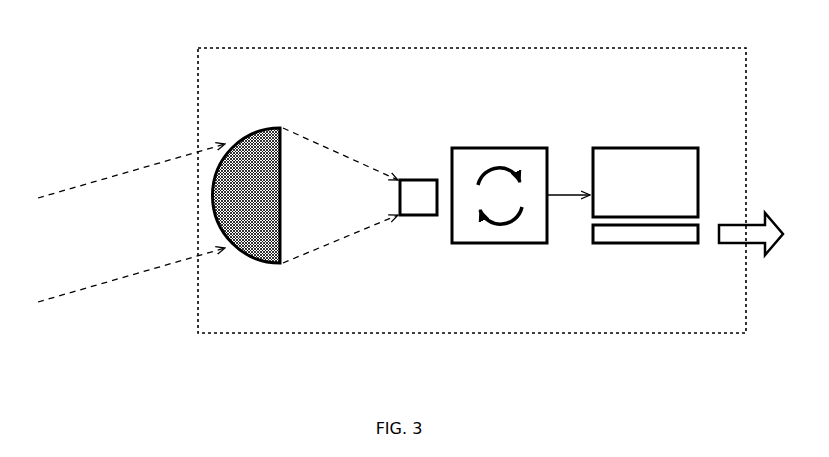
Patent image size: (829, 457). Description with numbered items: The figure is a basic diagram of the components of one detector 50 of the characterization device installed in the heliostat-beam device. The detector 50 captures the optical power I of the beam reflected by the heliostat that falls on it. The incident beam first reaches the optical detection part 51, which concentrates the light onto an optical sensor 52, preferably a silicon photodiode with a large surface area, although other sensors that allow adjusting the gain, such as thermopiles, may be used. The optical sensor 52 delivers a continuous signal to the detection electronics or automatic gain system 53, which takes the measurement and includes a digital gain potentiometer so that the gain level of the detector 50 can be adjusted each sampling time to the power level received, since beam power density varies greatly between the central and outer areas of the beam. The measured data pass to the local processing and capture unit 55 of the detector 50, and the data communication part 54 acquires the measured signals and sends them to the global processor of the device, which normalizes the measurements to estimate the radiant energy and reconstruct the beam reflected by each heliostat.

The detector 50 is at (472, 176).
The optical power I is at (131, 223).
The optical detection part 51 is at (257, 127).
The optical sensor 52 is at (417, 178).
The automatic gain system 53 is at (474, 246).
The data communication part 54 is at (649, 246).
The local processing and capture unit 55 is at (645, 146).